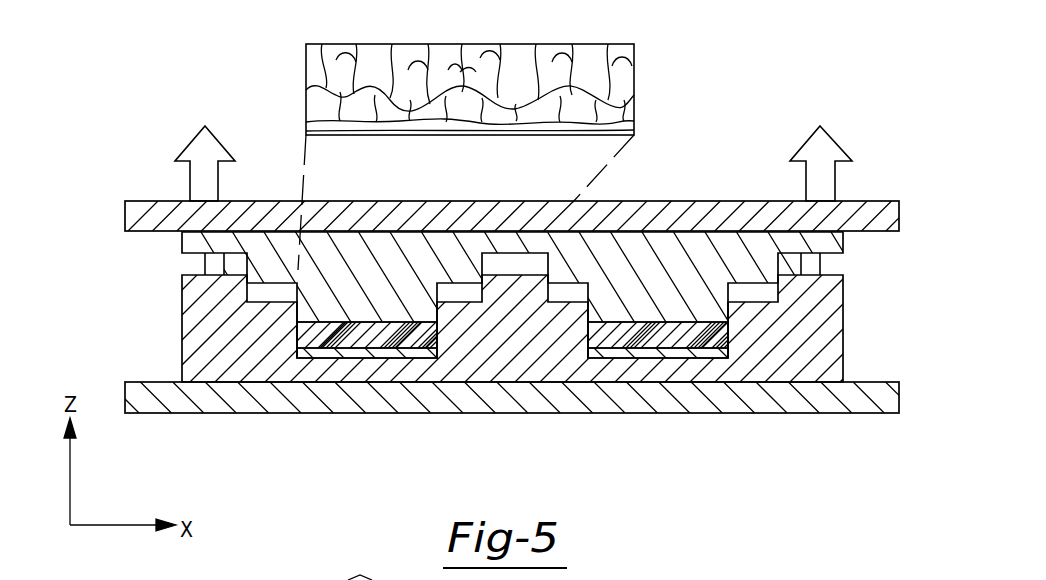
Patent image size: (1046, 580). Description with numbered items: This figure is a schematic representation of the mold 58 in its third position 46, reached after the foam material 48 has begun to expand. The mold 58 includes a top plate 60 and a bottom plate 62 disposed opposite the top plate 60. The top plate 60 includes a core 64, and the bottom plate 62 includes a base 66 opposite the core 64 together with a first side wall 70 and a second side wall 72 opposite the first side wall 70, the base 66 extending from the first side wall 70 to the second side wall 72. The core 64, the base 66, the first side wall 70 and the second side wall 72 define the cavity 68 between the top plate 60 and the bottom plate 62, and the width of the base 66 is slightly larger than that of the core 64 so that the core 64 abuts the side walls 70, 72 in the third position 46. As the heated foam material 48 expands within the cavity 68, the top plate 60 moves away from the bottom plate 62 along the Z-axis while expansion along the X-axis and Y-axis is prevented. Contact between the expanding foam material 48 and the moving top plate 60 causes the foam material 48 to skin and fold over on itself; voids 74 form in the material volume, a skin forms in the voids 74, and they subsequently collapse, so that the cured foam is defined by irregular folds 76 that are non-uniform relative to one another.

The third position 46 is at (150, 110).
The foam material 48 is at (388, 77).
The mold 58 is at (427, 197).
The top plate 60 is at (133, 237).
The bottom plate 62 is at (137, 380).
The core 64 is at (297, 291).
The base 66 is at (374, 356).
The cavity 68 is at (343, 322).
The first side wall 70 is at (297, 339).
The second side wall 72 is at (437, 333).
The voids 74 is at (455, 65).
The irregular folds 76 is at (467, 67).